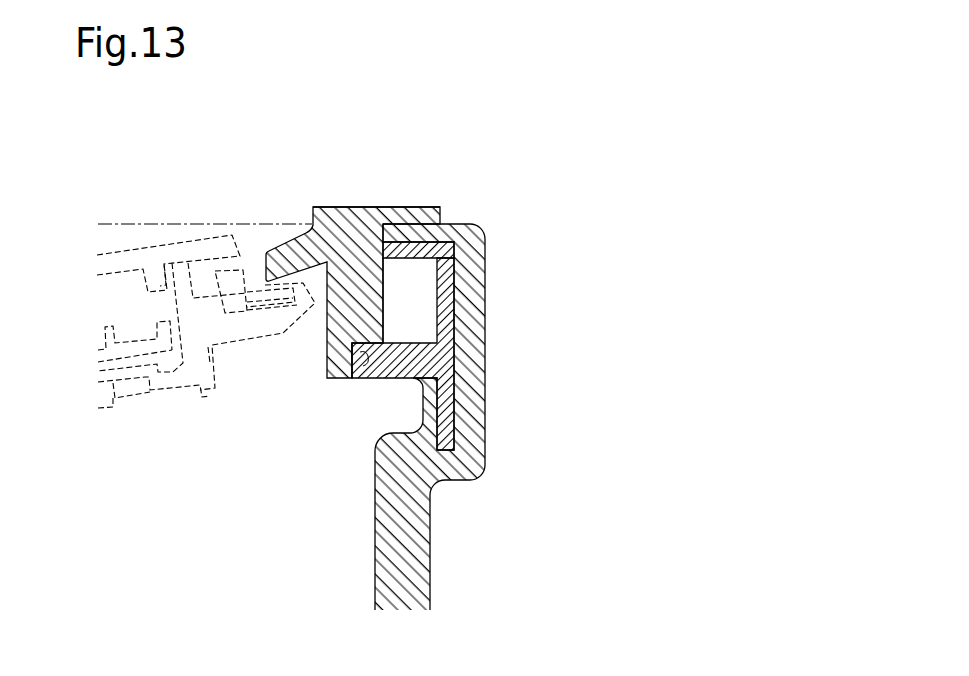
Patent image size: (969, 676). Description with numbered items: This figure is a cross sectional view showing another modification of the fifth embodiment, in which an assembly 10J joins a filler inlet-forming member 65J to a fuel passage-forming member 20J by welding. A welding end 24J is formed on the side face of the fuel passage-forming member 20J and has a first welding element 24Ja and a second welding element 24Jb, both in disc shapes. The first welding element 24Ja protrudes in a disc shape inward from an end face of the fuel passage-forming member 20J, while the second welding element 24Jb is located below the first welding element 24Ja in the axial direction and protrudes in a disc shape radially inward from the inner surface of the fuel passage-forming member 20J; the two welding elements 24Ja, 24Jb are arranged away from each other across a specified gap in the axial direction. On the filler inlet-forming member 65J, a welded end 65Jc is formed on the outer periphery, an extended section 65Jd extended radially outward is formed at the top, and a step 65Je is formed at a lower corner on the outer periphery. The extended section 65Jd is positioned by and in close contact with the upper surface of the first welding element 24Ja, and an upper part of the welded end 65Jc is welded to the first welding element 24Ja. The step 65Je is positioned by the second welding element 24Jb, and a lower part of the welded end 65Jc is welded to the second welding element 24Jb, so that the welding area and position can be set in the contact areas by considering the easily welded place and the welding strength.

The assembly (shown in phantom) 10J is at (178, 203).
The filler inlet-forming member 65J is at (343, 302).
The extended section 65Jd is at (395, 208).
The welded end 65Jc is at (345, 348).
The step 65Je is at (383, 362).
The welding end 24J is at (495, 326).
The first welding element 24Ja is at (400, 232).
The second welding element 24Jb is at (360, 345).
The fuel passage-forming member 20J is at (437, 556).